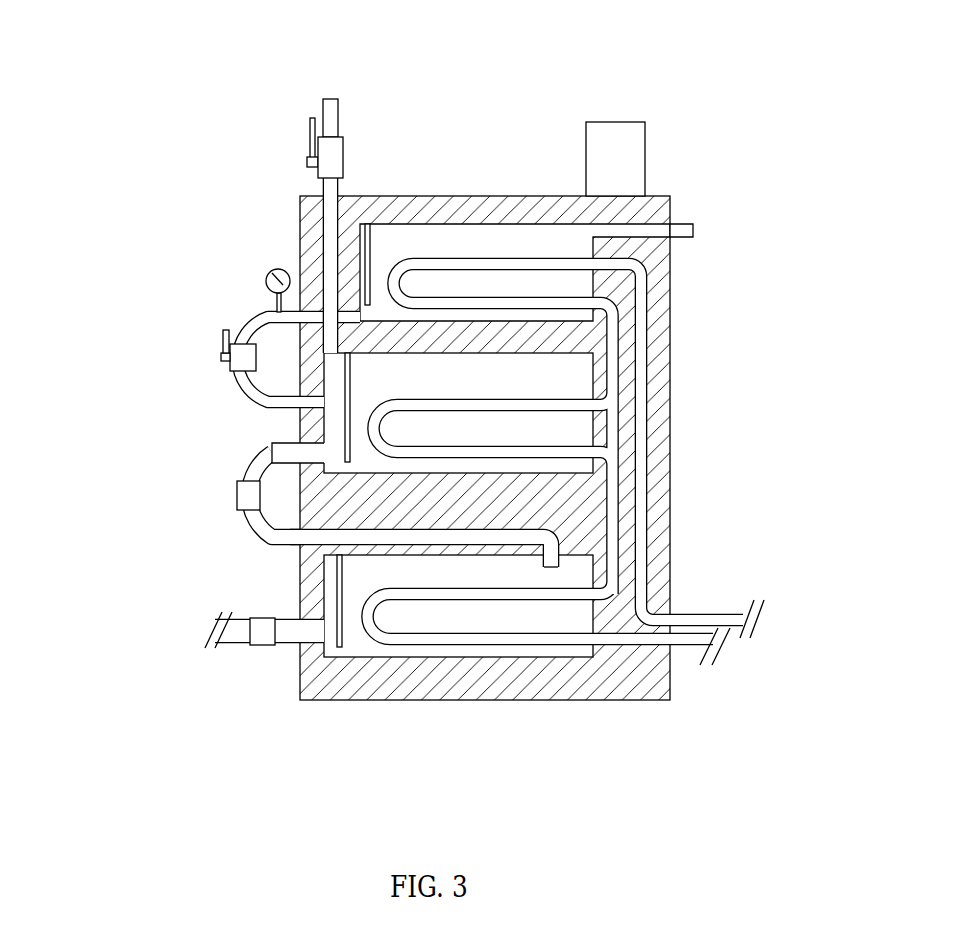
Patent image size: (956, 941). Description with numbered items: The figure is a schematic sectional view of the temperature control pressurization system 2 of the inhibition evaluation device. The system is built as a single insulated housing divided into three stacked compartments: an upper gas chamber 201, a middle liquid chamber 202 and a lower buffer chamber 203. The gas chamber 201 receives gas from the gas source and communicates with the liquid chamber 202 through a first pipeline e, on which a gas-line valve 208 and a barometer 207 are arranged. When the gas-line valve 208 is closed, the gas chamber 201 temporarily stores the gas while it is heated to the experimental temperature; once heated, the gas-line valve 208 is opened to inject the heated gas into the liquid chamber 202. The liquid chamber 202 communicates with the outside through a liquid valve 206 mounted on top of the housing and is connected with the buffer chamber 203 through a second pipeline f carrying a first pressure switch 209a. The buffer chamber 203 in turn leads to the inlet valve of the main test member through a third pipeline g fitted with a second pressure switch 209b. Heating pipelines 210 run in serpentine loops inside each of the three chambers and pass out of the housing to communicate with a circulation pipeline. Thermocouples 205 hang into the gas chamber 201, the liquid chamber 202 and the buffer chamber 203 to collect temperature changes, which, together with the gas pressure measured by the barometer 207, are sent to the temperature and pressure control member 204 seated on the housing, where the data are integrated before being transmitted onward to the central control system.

The temperature control pressurization system 2 is at (540, 404).
The gas chamber 201 is at (515, 184).
The liquid chamber 202 is at (554, 399).
The buffer chamber 203 is at (497, 655).
The temperature and pressure control member 204 is at (674, 112).
The thermocouples 205 is at (313, 400).
The liquid valve 206 is at (229, 180).
The barometer 207 is at (171, 236).
The gas-line valve 208 is at (145, 359).
The first pressure switch 209a is at (150, 529).
The second pressure switch 209b is at (183, 669).
The heating pipelines 210 is at (756, 586).
The first pipeline e is at (224, 321).
The second pipeline f is at (325, 543).
The third pipeline g is at (264, 682).